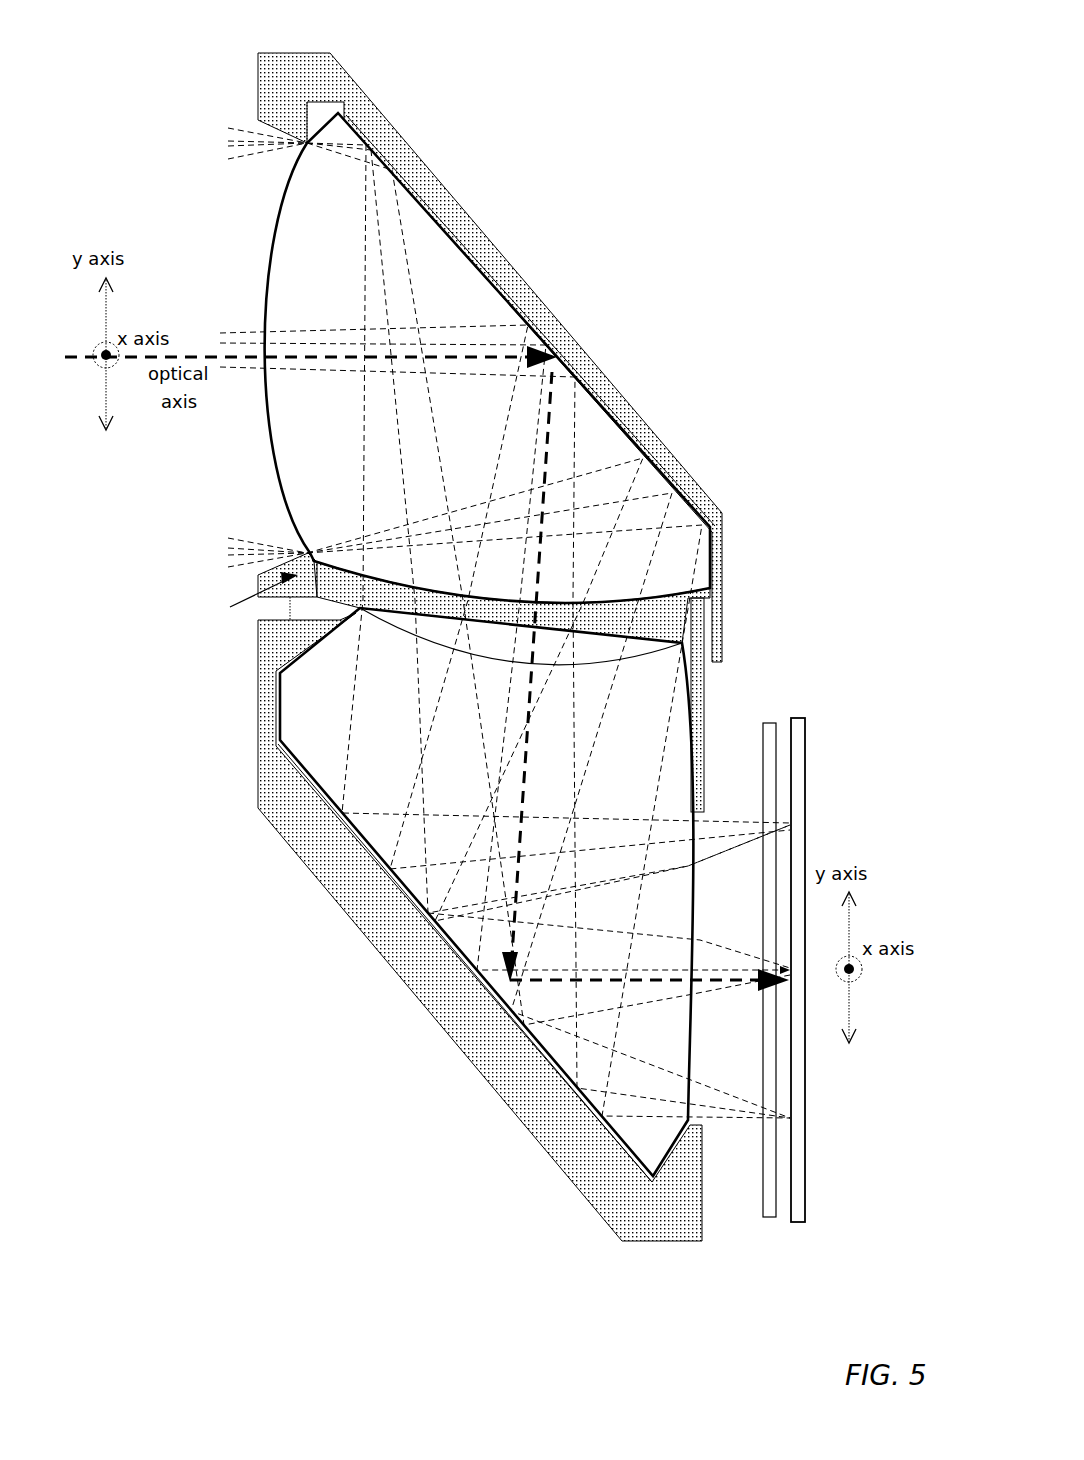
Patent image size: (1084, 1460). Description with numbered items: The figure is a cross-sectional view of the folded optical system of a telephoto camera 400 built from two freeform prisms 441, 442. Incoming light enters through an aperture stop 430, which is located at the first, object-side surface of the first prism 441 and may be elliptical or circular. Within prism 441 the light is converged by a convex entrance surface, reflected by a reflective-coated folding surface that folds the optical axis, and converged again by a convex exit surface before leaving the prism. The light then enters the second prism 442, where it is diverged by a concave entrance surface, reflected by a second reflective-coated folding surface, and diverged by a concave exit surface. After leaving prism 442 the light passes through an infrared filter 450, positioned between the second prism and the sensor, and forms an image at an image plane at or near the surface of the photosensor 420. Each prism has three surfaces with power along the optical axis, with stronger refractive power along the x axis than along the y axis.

The telephoto camera 400 is at (810, 90).
The aperture stop 430 is at (292, 125).
The first prism 441 is at (490, 358).
The second prism 442 is at (485, 894).
The infrared filter 450 is at (769, 712).
The photosensor 420 is at (798, 1234).